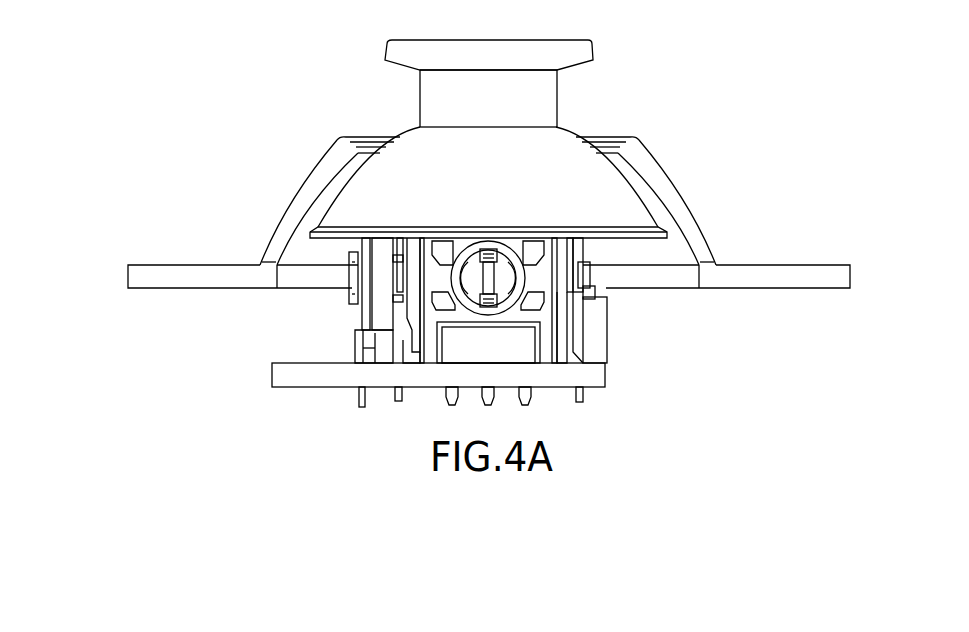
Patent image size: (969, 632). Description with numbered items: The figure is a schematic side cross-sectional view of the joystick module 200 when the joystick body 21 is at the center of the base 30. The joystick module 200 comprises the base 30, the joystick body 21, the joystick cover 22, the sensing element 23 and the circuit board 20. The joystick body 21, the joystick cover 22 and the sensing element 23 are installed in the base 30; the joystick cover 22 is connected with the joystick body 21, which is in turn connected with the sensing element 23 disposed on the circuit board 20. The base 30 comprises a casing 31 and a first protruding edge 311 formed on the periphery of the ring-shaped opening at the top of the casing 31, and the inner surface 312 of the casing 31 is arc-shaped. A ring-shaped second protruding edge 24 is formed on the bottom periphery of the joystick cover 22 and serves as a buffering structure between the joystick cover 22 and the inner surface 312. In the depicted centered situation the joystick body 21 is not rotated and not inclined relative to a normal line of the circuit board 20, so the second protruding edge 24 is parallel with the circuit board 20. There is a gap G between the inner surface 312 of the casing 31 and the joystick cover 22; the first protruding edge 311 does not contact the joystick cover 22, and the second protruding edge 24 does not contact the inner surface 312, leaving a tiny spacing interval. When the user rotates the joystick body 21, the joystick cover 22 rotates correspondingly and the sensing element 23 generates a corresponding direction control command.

The joystick module 200 is at (747, 50).
The circuit board 20 is at (305, 371).
The joystick body 21 is at (524, 45).
The joystick cover 22 is at (565, 138).
The sensing element 23 is at (598, 335).
The second protruding edge 24 is at (322, 226).
The base 30 is at (766, 261).
The casing 31 is at (709, 238).
The first protruding edge 311 is at (346, 143).
The inner surface 312 is at (284, 253).
The gap G is at (330, 186).